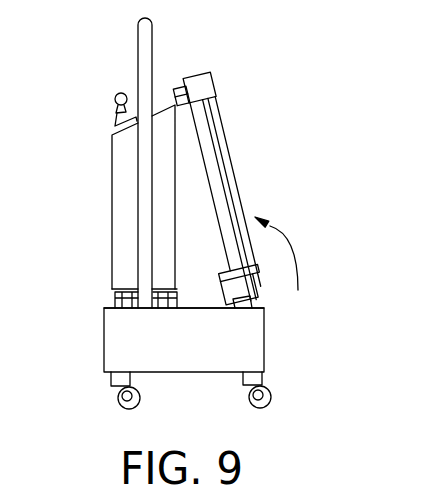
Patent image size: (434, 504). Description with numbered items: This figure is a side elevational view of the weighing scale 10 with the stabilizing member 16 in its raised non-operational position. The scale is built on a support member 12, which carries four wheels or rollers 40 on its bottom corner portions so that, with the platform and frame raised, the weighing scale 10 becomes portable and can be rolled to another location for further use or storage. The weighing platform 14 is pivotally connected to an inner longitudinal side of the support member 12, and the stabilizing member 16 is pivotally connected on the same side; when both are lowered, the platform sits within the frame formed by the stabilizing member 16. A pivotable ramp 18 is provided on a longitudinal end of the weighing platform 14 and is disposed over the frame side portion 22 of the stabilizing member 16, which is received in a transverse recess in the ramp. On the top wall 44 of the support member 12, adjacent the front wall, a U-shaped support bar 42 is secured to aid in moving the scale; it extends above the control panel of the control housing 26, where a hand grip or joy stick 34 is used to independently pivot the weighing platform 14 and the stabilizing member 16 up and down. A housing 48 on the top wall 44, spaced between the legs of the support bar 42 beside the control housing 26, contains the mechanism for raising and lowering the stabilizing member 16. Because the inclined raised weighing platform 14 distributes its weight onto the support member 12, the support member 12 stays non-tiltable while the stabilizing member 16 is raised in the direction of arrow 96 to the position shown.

The weighing scale 10 is at (86, 264).
The support member 12 is at (125, 335).
The weighing platform 14 is at (181, 90).
The stabilizing member 16 is at (193, 74).
The pivotable ramp 18 is at (214, 142).
The frame side portion 22 is at (252, 297).
The control housing 26 is at (125, 202).
The hand grip or joy stick 34 is at (115, 105).
The wheels or rollers 40 is at (249, 400).
The U-shaped support bar 42 is at (148, 33).
The top wall 44 is at (185, 309).
The housing 48 is at (140, 305).
The arrow 96 is at (286, 228).